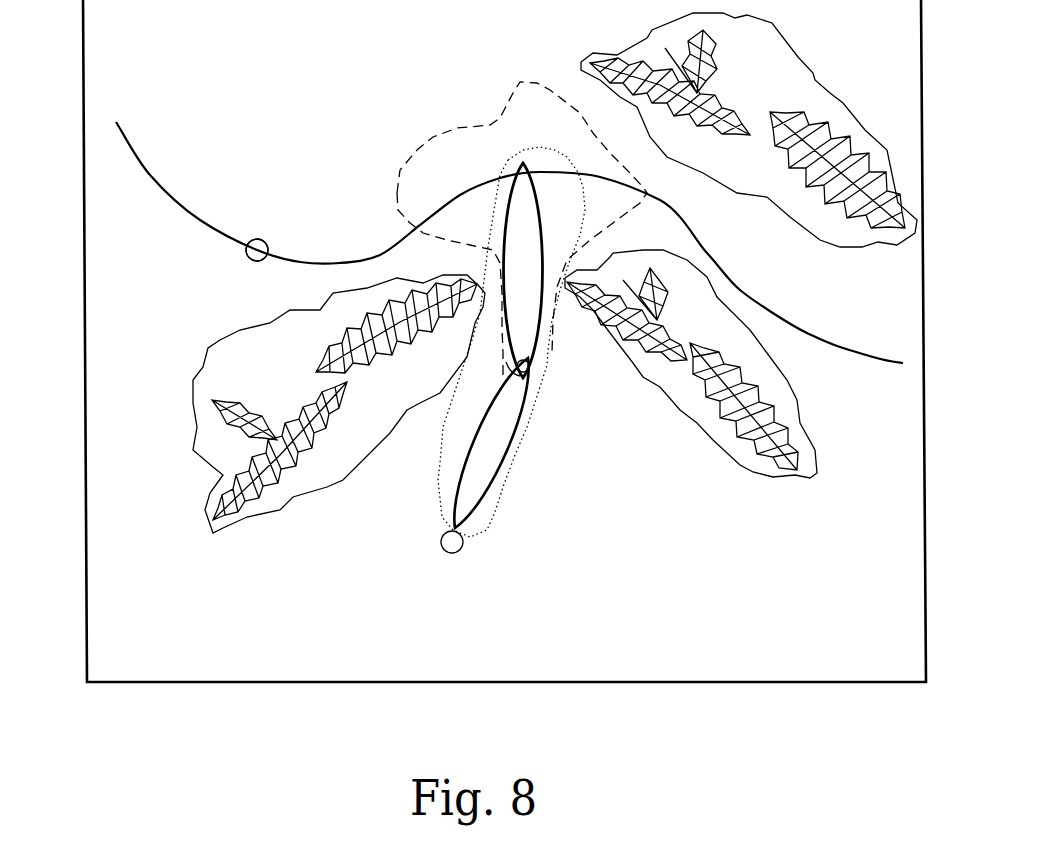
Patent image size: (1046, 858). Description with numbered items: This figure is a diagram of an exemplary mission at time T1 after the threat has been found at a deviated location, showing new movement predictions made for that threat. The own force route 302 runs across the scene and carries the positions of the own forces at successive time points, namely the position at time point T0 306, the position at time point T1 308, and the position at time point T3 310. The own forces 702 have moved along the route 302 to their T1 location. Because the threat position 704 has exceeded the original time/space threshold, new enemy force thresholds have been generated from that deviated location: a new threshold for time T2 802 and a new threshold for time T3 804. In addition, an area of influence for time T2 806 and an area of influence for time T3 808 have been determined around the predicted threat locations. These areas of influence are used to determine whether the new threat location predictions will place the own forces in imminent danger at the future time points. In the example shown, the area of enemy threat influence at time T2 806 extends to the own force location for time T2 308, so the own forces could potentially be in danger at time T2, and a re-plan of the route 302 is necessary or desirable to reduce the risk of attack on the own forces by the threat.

The own force route 302 is at (200, 165).
The position at time point T0 306 is at (235, 267).
The position at time point T1 308 is at (523, 200).
The position at time point T3 310 is at (770, 348).
The own forces 702 is at (260, 268).
The threat position 704 is at (455, 557).
The new threshold for time T2 802 is at (477, 485).
The new threshold for time T3 804 is at (530, 336).
The area of influence for time T2 806 is at (540, 459).
The area of influence for time T3 808 is at (421, 129).